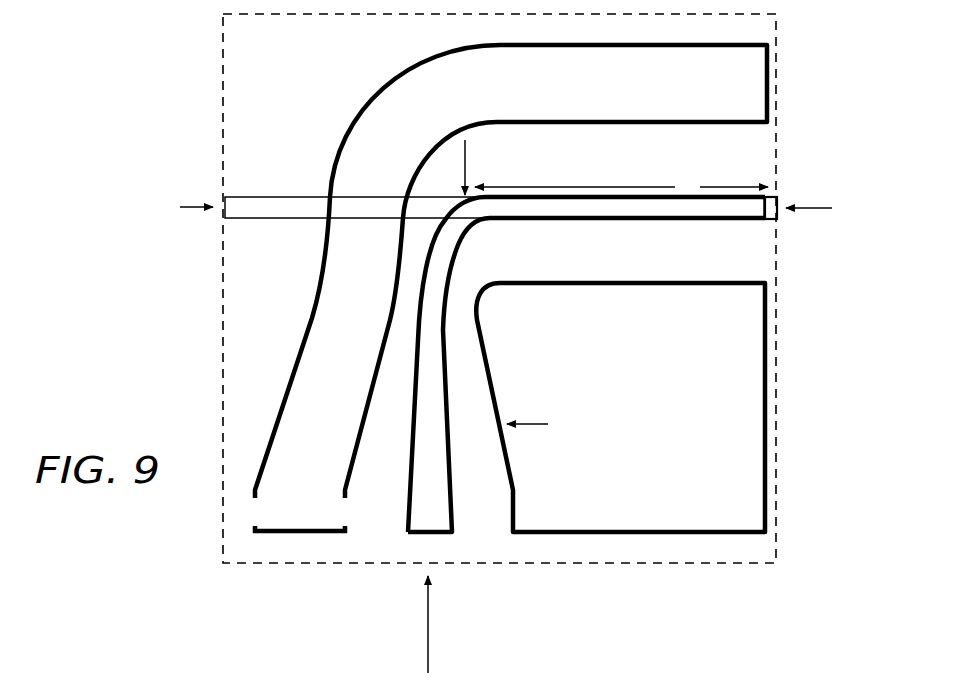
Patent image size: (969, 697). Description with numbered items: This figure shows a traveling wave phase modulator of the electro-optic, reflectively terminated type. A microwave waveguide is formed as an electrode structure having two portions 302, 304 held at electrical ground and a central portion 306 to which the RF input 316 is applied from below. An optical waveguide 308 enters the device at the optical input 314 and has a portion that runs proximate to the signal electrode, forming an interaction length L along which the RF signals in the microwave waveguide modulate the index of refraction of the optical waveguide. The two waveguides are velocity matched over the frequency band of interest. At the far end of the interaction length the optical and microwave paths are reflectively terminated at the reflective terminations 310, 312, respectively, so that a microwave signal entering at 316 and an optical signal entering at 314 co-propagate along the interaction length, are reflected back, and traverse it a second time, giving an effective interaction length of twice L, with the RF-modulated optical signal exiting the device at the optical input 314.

The microwave waveguide ground portion 302 is at (628, 383).
The microwave waveguide ground portion 304 is at (343, 423).
The microwave waveguide signal portion 306 is at (432, 502).
The optical waveguide 308 is at (318, 200).
The reflective termination 310 is at (776, 198).
The reflective termination 312 is at (762, 210).
The optical input 314 is at (184, 221).
The RF input 316 is at (504, 624).